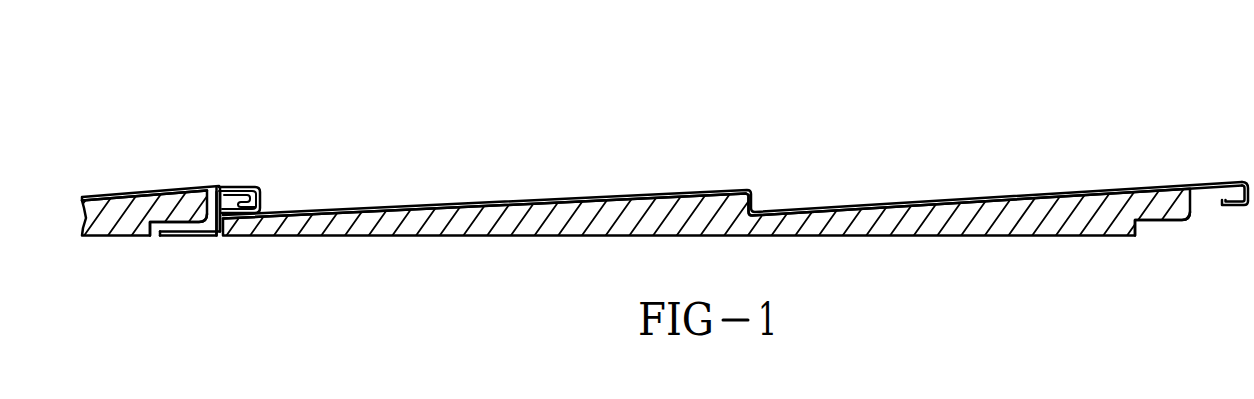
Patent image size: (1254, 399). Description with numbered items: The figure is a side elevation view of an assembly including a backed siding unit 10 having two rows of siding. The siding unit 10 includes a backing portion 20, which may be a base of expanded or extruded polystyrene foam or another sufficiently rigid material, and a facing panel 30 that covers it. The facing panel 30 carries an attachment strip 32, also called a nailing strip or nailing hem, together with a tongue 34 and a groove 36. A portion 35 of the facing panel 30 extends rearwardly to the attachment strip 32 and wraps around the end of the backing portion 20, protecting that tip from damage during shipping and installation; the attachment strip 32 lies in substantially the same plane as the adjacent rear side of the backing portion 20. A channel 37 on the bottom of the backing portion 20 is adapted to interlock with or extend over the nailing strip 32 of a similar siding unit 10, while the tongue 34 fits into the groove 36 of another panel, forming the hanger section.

The siding unit 10 is at (556, 108).
The backing portion 20 is at (113, 236).
The facing panel 30 is at (720, 190).
The attachment strip 32 is at (192, 236).
The tongue 34 is at (246, 186).
The portion 35 is at (217, 204).
The groove 36 is at (263, 189).
The channel 37 is at (158, 223).